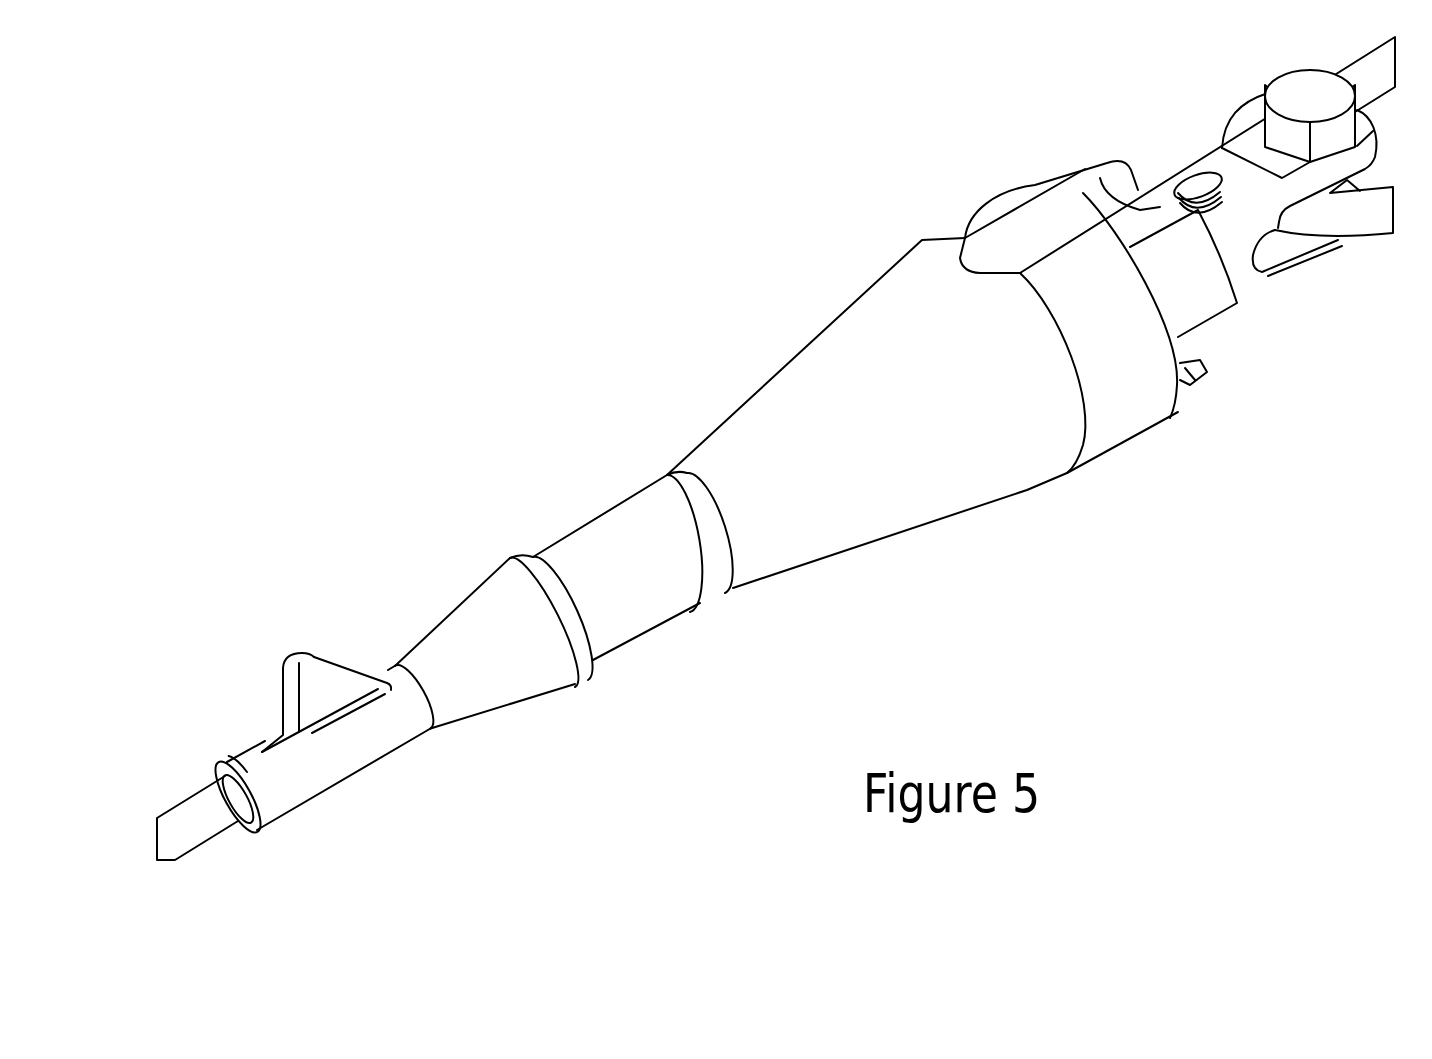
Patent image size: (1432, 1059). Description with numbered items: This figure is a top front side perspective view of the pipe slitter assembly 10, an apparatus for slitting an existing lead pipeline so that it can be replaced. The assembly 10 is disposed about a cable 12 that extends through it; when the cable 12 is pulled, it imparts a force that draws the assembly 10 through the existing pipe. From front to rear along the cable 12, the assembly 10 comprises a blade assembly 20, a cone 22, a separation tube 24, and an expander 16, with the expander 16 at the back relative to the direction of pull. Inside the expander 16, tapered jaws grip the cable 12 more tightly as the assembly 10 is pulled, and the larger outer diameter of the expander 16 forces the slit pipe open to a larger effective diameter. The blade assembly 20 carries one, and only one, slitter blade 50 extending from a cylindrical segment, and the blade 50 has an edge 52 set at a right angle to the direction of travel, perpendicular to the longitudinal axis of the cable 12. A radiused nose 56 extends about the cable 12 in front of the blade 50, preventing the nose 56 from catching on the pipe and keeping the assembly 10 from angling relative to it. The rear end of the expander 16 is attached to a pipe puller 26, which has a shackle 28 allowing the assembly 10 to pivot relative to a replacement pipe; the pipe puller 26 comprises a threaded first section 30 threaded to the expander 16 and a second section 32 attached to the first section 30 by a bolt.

The pipe slitter assembly 10 is at (768, 466).
The cable 12 is at (180, 843).
The expander 16 is at (888, 496).
The blade assembly 20 is at (383, 785).
The cone 22 is at (488, 690).
The separation tube 24 is at (597, 543).
The pipe puller 26 is at (1221, 197).
The shackle 28 is at (1277, 125).
The threaded first section 30 is at (1090, 170).
The second section 32 is at (1232, 270).
The slitter blade 50 is at (328, 675).
The edge 52 is at (285, 690).
The nose 56 is at (222, 773).